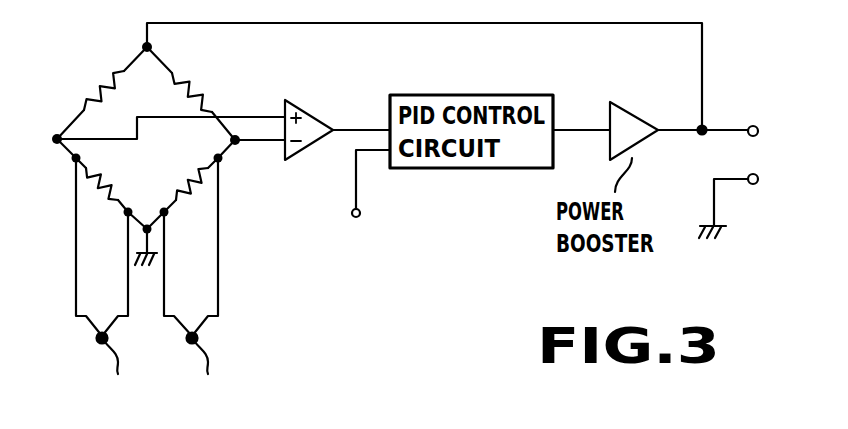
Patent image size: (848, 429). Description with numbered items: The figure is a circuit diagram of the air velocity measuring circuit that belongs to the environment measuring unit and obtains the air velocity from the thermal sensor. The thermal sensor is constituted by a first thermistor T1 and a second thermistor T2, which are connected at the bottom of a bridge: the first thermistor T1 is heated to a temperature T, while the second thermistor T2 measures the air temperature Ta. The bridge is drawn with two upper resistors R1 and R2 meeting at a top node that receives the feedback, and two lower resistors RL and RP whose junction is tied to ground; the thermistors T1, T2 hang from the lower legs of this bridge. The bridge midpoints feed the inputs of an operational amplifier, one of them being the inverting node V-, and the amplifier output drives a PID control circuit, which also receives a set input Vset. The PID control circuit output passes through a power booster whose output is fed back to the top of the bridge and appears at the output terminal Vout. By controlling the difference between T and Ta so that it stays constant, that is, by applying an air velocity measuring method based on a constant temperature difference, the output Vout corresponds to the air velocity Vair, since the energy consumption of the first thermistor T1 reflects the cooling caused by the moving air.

The bridge resistor R1 is at (191, 93).
The bridge resistor R2 is at (102, 93).
The load resistor RL is at (92, 189).
The resistor RP is at (199, 189).
The first thermistor T1 is at (193, 283).
The second thermistor T2 is at (103, 284).
The inverting bridge node V- is at (260, 160).
The set voltage input Vset is at (362, 203).
The output Vout is at (757, 182).